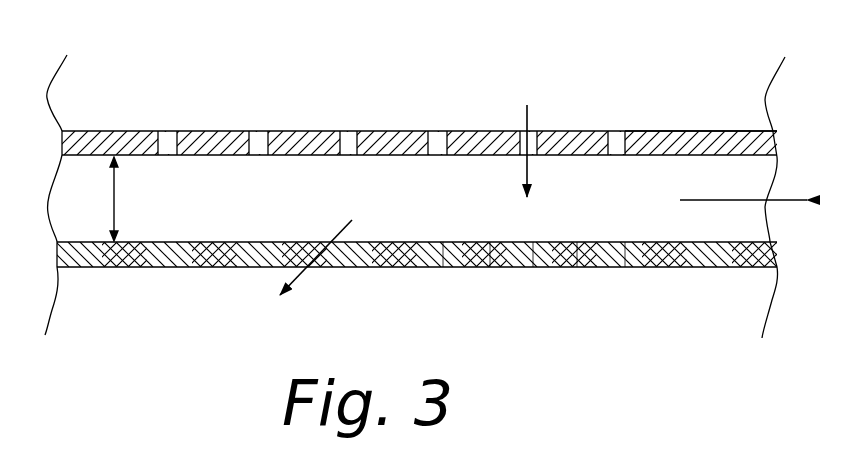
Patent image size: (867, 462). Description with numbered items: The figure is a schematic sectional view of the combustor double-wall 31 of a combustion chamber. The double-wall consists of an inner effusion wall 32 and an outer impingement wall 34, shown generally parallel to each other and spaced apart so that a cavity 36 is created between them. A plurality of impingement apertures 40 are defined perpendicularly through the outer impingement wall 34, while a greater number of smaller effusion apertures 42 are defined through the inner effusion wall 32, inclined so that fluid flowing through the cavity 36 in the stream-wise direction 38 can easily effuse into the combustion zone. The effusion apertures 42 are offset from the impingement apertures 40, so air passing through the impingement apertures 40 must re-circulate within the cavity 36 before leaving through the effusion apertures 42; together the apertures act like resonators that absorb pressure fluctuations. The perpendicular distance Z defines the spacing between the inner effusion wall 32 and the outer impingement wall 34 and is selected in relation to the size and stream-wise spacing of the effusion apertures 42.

The combustor double-wall 31 is at (419, 195).
The inner effusion wall 32 is at (725, 268).
The outer impingement wall 34 is at (672, 131).
The cavity 36 is at (414, 120).
The stream-wise direction 38 is at (732, 198).
The impingement apertures 40 is at (515, 131).
The effusion apertures 42 is at (443, 268).
The perpendicular distance Z is at (114, 198).